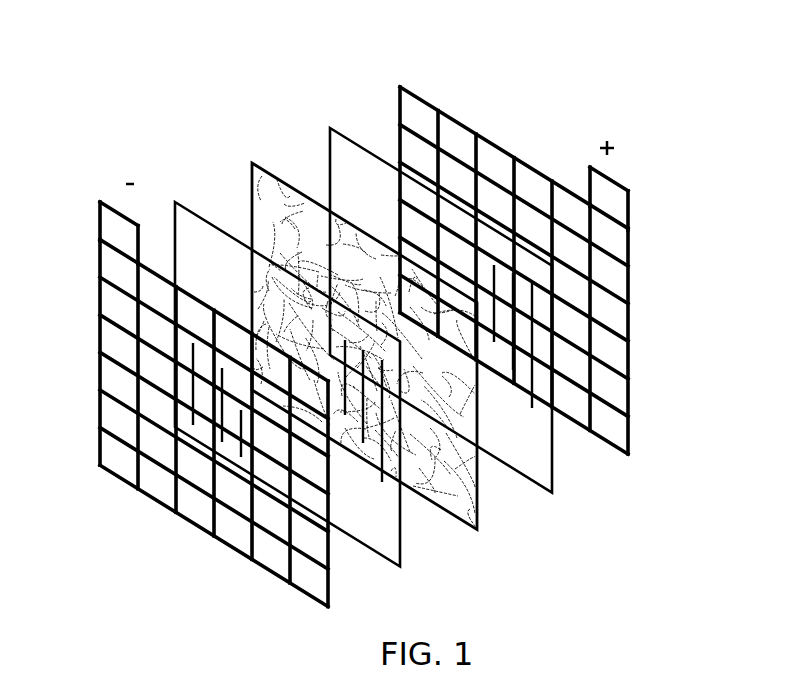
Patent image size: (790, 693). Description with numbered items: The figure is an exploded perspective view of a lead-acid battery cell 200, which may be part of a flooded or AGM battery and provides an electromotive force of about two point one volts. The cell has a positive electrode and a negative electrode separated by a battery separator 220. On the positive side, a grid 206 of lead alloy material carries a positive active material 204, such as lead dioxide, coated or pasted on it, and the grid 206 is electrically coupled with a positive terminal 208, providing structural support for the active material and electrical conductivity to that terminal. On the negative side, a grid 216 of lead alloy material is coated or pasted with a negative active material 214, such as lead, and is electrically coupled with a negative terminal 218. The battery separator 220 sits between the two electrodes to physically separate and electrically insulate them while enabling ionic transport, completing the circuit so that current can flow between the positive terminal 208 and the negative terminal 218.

The lead-acid battery cell 200 is at (177, 136).
The positive active material 204 is at (530, 467).
The grid 206 is at (602, 440).
The positive terminal 208 is at (629, 190).
The negative active material 214 is at (375, 543).
The grid 216 is at (177, 515).
The negative terminal 218 is at (100, 210).
The battery separator 220 is at (450, 507).